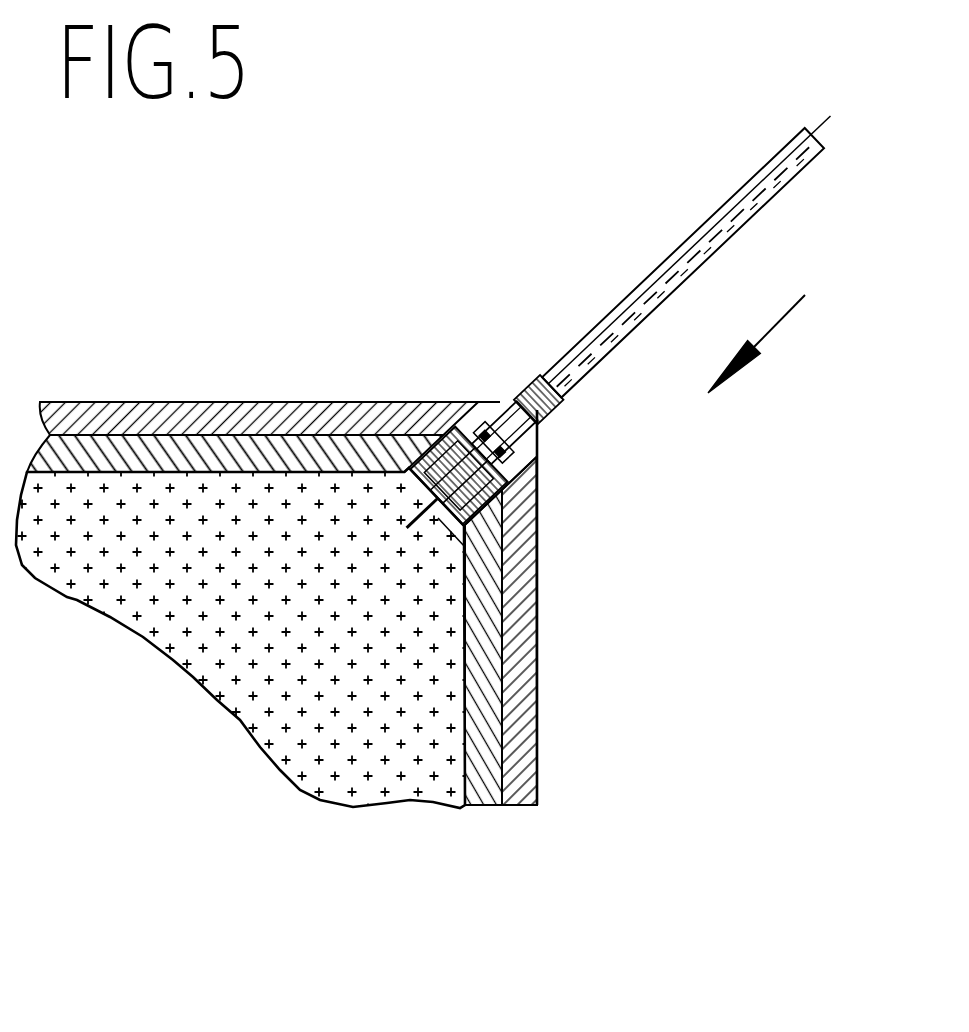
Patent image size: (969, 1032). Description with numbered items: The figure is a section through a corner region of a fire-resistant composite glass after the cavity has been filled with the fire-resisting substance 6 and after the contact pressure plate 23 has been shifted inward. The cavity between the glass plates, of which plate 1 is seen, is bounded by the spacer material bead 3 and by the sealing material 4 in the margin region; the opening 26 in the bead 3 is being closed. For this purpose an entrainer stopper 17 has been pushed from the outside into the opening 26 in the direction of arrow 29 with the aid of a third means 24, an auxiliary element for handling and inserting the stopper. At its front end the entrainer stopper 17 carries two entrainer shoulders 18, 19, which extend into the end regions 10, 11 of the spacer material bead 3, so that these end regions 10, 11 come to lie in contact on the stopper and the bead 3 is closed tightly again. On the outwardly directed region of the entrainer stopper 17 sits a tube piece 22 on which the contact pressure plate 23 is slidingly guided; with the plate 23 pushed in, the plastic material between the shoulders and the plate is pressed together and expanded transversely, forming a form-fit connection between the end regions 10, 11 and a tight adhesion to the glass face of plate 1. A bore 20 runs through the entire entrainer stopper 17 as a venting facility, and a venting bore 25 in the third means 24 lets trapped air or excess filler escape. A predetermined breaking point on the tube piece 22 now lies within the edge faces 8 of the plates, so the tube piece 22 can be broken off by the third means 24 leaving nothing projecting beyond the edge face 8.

The plate 1 is at (192, 677).
The spacer material bead 3 is at (90, 450).
The sealing material 4 is at (137, 415).
The fire-resisting substance 6 is at (335, 712).
The edge face 8 is at (216, 405).
The end region 10 is at (443, 437).
The end region 11 is at (537, 583).
The entrainer stopper 17 is at (443, 437).
The entrainer shoulder 18 is at (409, 468).
The entrainer shoulder 19 is at (538, 555).
The bore 20 is at (537, 518).
The tube piece 22 is at (500, 453).
The contact pressure plate 23 is at (459, 437).
The third means 24 is at (757, 170).
The venting bore 25 is at (633, 310).
The opening 26 is at (537, 625).
The arrow 29 is at (767, 340).